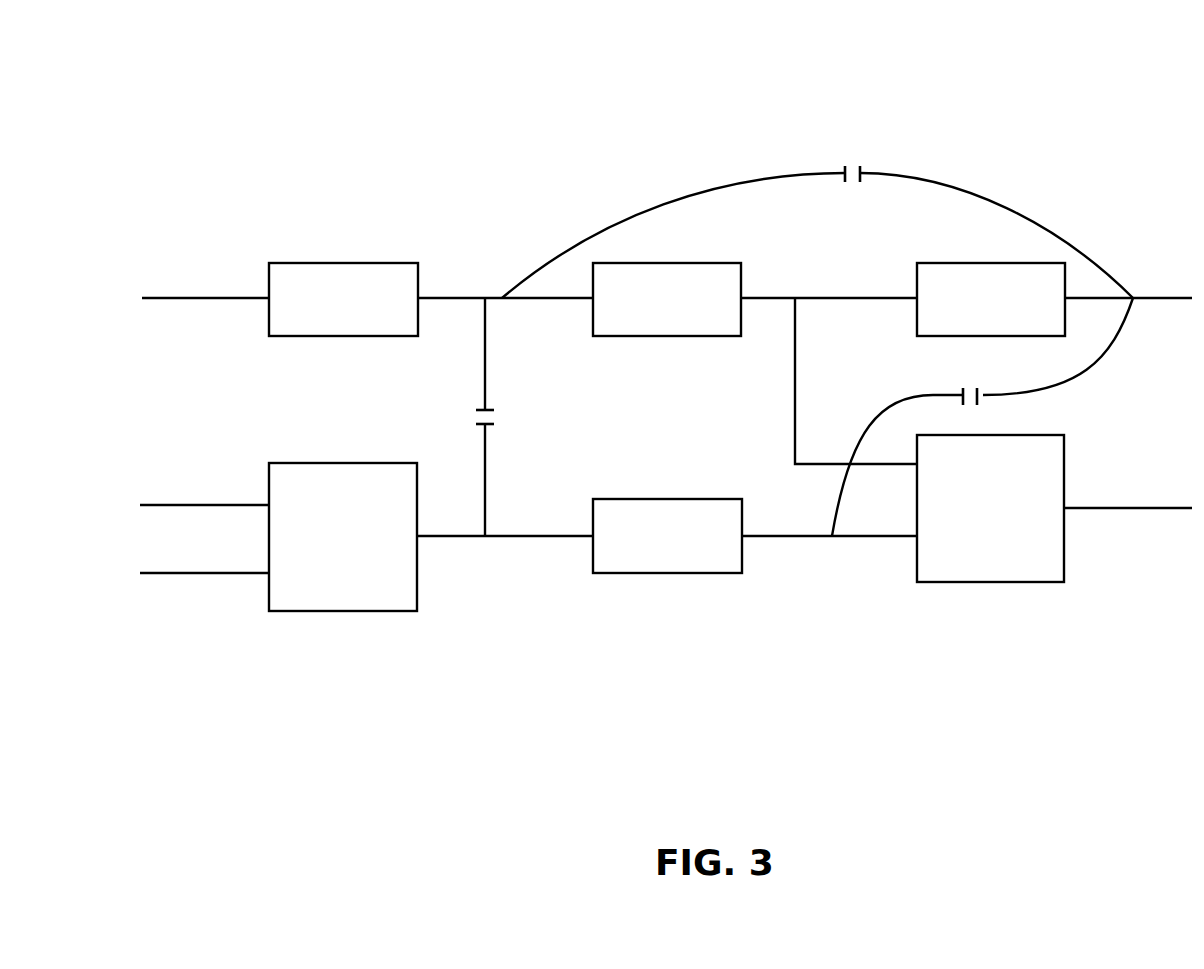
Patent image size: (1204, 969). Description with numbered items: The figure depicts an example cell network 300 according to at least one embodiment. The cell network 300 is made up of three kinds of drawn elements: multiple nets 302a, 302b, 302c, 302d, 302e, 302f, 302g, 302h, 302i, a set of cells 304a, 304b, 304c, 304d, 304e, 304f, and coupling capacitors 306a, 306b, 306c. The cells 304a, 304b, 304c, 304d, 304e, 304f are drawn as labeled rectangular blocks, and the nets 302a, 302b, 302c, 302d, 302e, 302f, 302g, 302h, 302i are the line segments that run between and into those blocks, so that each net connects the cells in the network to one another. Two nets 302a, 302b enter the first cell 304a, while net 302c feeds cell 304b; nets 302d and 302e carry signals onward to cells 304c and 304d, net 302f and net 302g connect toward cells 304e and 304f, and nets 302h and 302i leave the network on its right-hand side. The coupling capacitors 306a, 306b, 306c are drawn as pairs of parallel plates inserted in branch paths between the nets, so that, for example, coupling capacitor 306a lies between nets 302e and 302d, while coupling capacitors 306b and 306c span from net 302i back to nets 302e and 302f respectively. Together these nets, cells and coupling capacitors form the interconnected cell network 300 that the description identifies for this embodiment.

The cell network 300 is at (154, 104).
The net 302a is at (242, 577).
The net 302b is at (240, 500).
The net 302c is at (245, 297).
The net 302d is at (484, 540).
The net 302e is at (492, 295).
The net 302f is at (824, 540).
The net 302g is at (799, 293).
The net 302h is at (1117, 510).
The net 302i is at (1147, 296).
The cell 304a is at (316, 547).
The cell 304b is at (316, 310).
The cell 304c is at (694, 548).
The cell 304d is at (640, 310).
The cell 304e is at (963, 520).
The cell 304f is at (966, 310).
The coupling capacitor 306a is at (490, 482).
The coupling capacitor 306b is at (662, 200).
The coupling capacitor 306c is at (1102, 370).